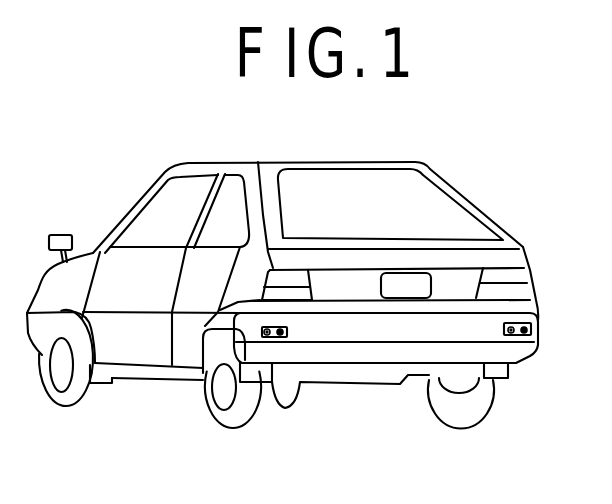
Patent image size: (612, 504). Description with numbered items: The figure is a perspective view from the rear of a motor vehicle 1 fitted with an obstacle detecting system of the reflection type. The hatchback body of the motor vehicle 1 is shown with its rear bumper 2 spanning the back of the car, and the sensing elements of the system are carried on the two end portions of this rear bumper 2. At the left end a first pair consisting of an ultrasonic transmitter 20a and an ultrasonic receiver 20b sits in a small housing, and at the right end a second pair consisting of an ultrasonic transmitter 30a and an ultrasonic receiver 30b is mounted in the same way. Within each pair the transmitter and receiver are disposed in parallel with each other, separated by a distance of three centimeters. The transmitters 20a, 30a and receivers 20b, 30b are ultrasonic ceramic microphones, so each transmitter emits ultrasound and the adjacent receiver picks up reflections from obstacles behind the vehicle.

The motor vehicle 1 is at (394, 162).
The rear bumper 2 is at (496, 320).
The ultrasonic transmitter 20a is at (268, 338).
The ultrasonic receiver 20b is at (285, 338).
The ultrasonic transmitter 30a is at (512, 336).
The ultrasonic receiver 30b is at (525, 334).